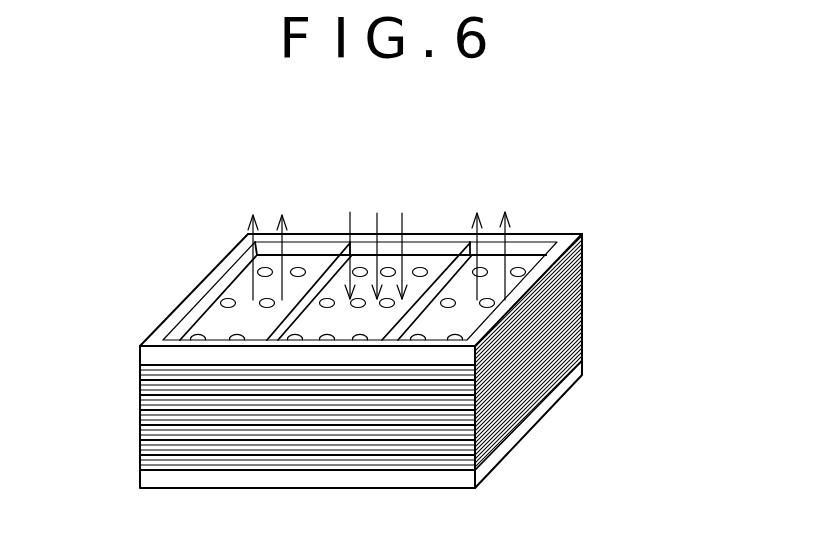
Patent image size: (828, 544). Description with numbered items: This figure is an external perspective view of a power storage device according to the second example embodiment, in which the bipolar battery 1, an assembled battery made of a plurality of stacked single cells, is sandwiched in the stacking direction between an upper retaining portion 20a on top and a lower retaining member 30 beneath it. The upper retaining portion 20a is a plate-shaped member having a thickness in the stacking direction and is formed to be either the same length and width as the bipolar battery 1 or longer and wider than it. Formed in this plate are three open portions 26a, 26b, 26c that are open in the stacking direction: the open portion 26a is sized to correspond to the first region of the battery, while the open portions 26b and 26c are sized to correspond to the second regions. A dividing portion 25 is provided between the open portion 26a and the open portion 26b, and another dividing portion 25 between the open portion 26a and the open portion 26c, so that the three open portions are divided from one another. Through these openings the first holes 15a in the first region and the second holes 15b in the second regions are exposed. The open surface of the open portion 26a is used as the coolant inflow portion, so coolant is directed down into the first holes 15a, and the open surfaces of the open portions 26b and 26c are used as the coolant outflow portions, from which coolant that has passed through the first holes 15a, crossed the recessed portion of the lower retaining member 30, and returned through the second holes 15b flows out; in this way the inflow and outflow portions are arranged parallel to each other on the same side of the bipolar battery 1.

The bipolar battery 1 is at (584, 345).
The first holes 15a is at (393, 263).
The second holes 15b is at (228, 303).
The upper retaining portion 20a is at (578, 229).
The dividing portion 25 is at (268, 328).
The open portion 26a is at (438, 263).
The open portion 26b is at (307, 253).
The open portion 26c is at (526, 265).
The lower retaining member 30 is at (532, 431).